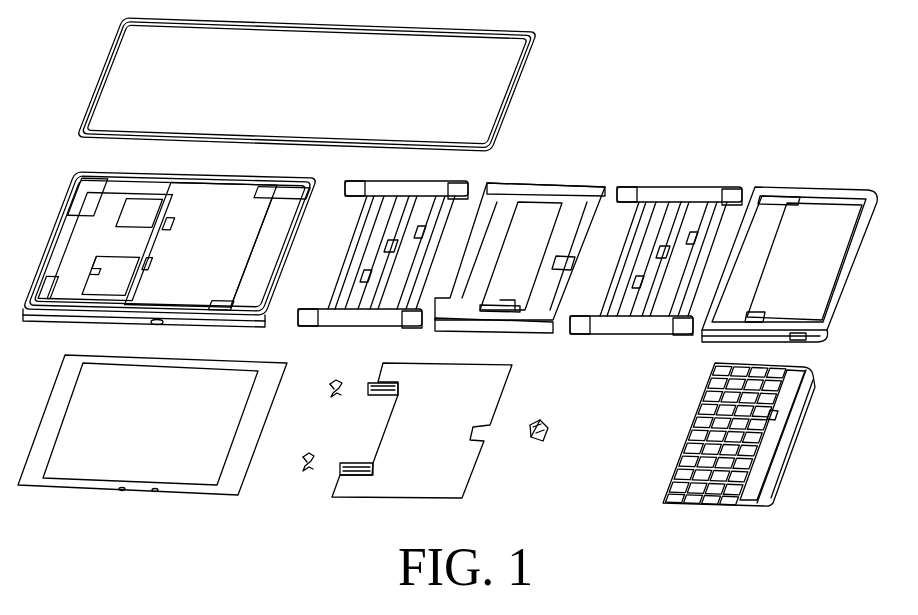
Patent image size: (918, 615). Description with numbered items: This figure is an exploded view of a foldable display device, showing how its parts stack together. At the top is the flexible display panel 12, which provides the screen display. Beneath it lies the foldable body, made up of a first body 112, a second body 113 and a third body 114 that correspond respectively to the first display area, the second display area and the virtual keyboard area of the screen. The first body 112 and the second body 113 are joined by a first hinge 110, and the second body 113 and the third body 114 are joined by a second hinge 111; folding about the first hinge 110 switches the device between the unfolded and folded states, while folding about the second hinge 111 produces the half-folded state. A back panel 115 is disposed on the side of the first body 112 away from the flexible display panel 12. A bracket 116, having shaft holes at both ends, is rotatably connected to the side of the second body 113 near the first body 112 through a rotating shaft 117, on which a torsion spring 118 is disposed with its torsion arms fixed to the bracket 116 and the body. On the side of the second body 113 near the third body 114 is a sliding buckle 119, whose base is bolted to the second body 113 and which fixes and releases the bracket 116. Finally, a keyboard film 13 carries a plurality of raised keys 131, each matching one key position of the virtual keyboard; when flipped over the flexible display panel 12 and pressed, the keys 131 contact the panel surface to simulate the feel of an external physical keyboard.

The flexible display panel 12 is at (527, 72).
The keyboard film 13 is at (751, 422).
The first hinge 110 is at (405, 190).
The second hinge 111 is at (698, 191).
The first body 112 is at (212, 186).
The second body 113 is at (555, 184).
The third body 114 is at (828, 187).
The back panel 115 is at (190, 364).
The bracket 116 is at (447, 374).
The rotating shaft 117 is at (340, 375).
The torsion spring 118 is at (316, 455).
The sliding buckle 119 is at (546, 425).
The raised keys 131 is at (700, 410).